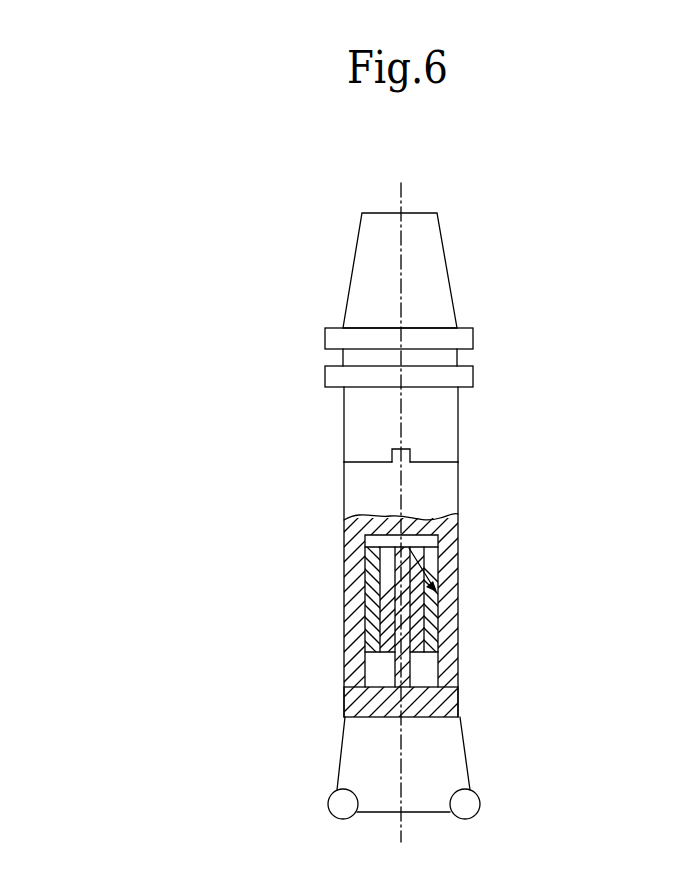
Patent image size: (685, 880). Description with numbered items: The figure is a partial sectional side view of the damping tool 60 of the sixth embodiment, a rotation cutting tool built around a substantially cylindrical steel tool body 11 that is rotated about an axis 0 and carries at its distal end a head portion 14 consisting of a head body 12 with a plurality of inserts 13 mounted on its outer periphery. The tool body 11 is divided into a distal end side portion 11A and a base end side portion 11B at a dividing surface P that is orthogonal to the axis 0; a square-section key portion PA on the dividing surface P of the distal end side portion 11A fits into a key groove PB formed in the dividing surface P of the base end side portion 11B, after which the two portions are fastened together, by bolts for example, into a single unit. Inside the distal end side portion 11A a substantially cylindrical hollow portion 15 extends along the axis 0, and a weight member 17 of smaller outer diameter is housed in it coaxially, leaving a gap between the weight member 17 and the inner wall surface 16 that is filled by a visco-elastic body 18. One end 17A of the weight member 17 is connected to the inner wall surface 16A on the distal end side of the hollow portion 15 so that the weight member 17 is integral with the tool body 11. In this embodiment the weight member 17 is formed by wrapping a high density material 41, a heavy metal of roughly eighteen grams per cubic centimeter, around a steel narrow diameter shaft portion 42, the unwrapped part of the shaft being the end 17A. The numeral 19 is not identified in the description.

The axis 0 is at (403, 258).
The damping tool 60 is at (559, 393).
The tool body 11 is at (305, 552).
The base end side portion 11B is at (334, 433).
The distal end side portion 11A is at (333, 474).
The dividing surface P is at (462, 433).
The key groove PB is at (409, 449).
The key portion PA is at (412, 461).
The hollow portion 15 is at (451, 600).
The inner wall surface 16 is at (414, 543).
The inner wall surface on the distal end side 16A is at (430, 678).
The visco-elastic body 18 is at (366, 548).
The weight member 17 is at (351, 658).
The narrow diameter shaft portion 42 is at (372, 597).
The high density material 41 is at (386, 640).
The end of the weight member 17A is at (346, 676).
The bottom plate 19 is at (452, 700).
The head portion 14 is at (475, 768).
The head body 12 is at (453, 750).
The inserts 13 is at (447, 800).